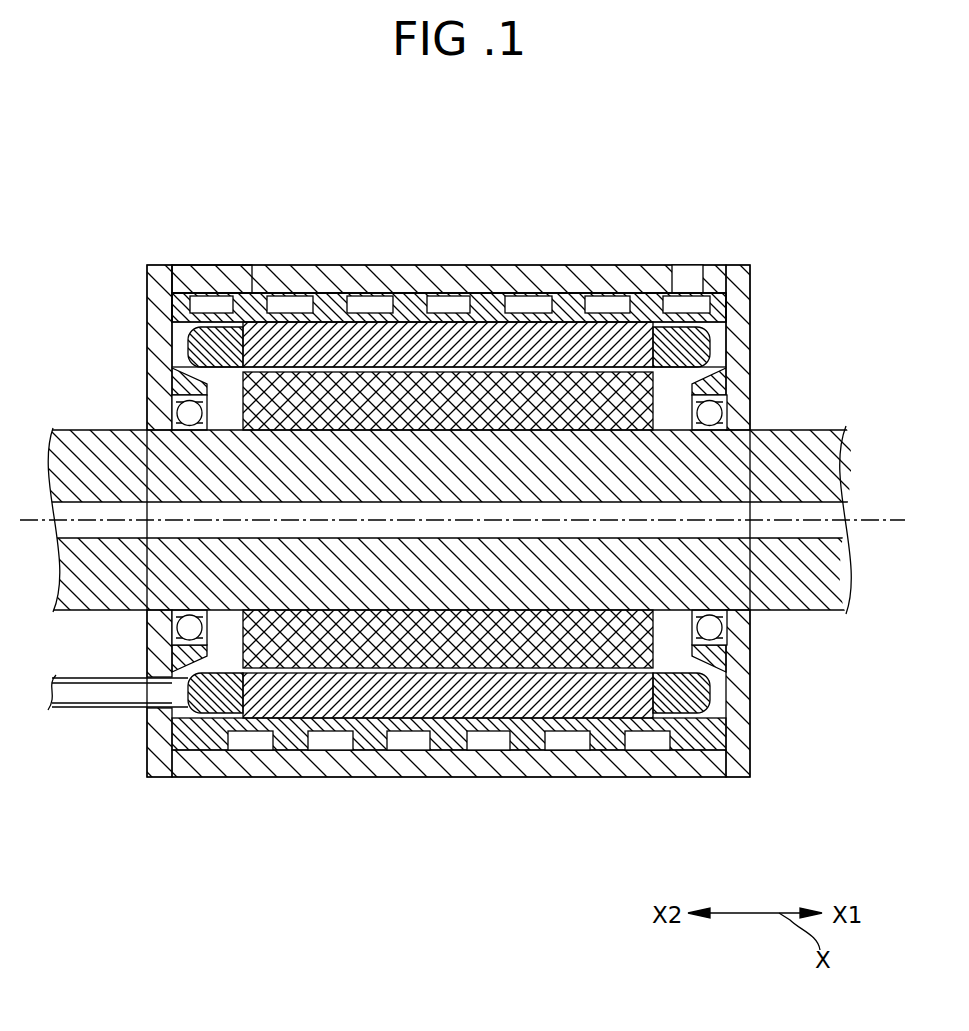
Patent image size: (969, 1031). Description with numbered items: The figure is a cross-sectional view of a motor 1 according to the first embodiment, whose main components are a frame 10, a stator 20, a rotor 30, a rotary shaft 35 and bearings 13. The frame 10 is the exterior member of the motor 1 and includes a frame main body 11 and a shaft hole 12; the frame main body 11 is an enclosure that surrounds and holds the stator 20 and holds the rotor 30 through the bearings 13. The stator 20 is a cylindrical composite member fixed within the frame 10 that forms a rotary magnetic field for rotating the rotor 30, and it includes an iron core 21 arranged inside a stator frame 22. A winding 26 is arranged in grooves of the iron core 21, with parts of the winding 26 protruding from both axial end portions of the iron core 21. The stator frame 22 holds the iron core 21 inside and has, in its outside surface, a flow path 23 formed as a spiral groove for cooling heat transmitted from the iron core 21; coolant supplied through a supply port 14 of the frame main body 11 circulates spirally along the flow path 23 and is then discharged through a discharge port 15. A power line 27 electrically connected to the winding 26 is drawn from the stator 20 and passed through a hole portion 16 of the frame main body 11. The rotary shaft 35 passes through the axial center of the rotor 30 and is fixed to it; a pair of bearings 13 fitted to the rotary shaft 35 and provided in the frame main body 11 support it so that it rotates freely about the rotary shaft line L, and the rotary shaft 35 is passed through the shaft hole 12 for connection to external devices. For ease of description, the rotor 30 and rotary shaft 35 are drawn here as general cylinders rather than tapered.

The motor 1 is at (786, 162).
The frame 10 is at (652, 250).
The frame main body 11 is at (714, 266).
The shaft hole 12 is at (133, 422).
The bearings 13 is at (168, 378).
The supply port 14 is at (688, 261).
The discharge port 15 is at (226, 259).
The hole portion 16 is at (133, 667).
The stator 20 is at (210, 296).
The iron core 21 is at (577, 322).
The stator frame 22 is at (415, 299).
The flow path 23 is at (376, 300).
The winding 26 is at (703, 337).
The power line 27 is at (81, 710).
The rotor 30 is at (666, 382).
The rotary shaft 35 is at (825, 428).
The rotary shaft line L is at (882, 520).